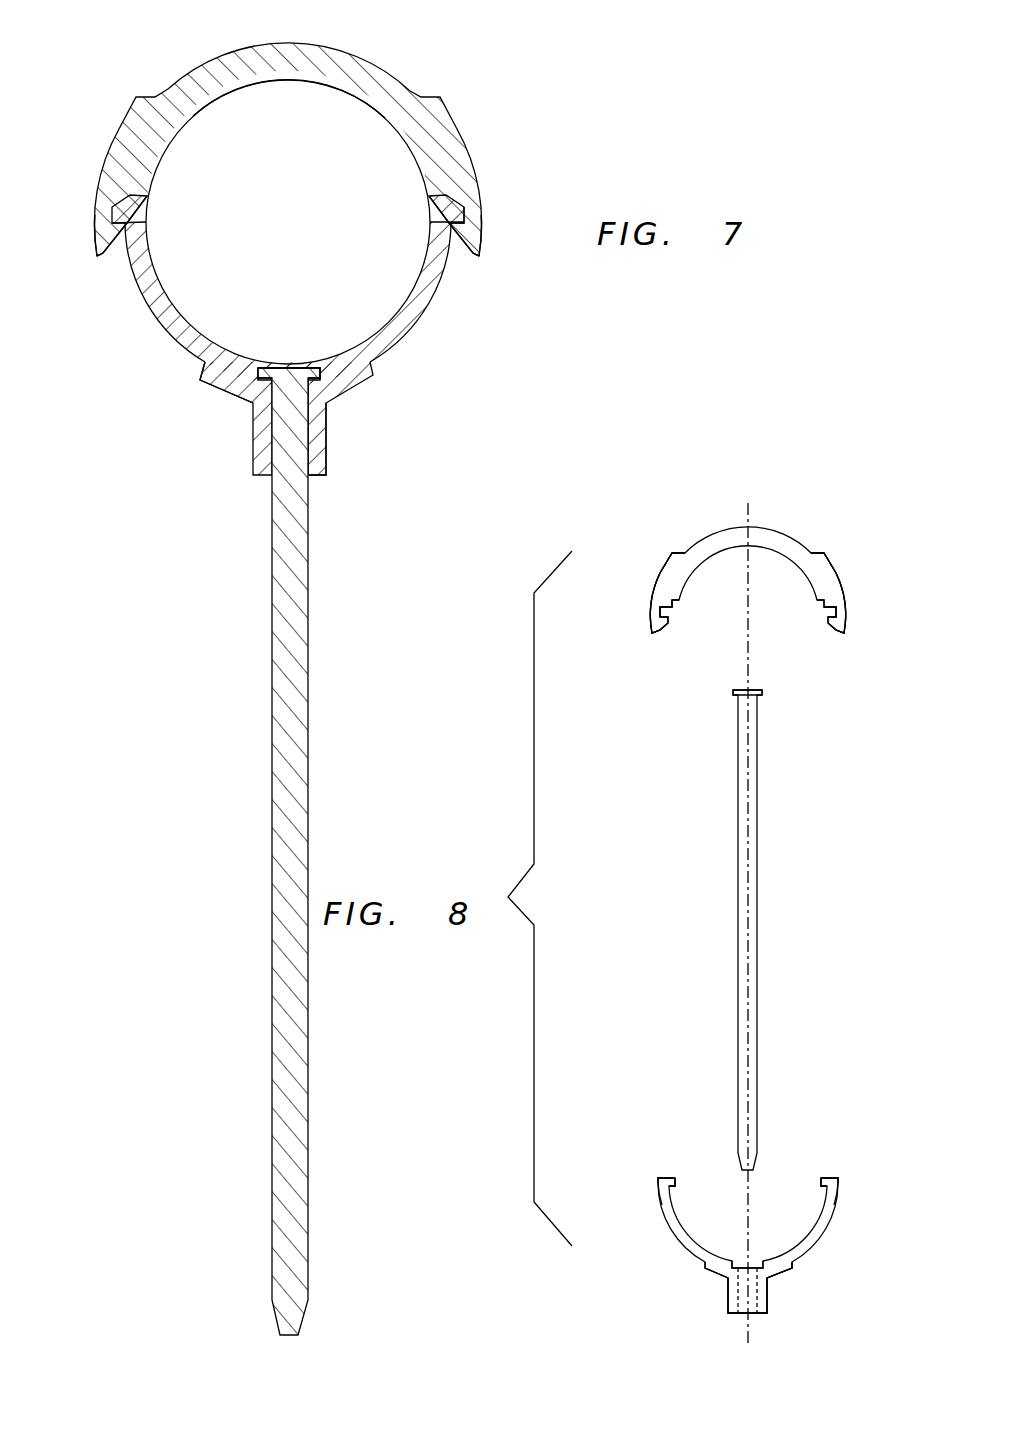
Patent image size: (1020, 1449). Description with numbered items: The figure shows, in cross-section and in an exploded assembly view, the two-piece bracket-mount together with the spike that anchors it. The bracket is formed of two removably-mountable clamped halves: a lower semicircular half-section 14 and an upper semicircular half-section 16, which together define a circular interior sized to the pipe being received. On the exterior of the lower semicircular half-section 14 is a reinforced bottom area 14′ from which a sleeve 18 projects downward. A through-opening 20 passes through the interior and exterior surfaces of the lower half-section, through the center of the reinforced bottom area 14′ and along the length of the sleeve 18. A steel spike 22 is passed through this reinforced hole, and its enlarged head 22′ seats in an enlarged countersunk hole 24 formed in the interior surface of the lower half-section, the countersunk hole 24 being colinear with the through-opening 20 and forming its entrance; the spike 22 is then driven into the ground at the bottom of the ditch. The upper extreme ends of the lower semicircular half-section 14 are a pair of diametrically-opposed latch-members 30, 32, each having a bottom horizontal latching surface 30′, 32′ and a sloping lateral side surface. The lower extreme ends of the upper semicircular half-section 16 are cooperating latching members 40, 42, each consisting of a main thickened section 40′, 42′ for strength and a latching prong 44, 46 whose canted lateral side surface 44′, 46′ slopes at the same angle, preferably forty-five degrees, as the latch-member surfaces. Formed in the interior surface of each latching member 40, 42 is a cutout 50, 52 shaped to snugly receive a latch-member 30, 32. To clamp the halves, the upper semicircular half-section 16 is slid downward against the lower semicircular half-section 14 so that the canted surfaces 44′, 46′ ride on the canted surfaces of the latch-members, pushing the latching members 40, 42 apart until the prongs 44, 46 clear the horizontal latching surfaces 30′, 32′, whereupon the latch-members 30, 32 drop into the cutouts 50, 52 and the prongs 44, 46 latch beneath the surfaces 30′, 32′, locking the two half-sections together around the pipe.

In FIG. 7, the lower semicircular half-section 14 is at (426, 323).
In FIG. 8, the lower semicircular half-section 14 is at (824, 1237).
In FIG. 7, the reinforced bottom area 14′ is at (212, 385).
In FIG. 8, the reinforced bottom area 14′ is at (784, 1276).
In FIG. 7, the upper semicircular half-section 16 is at (384, 58).
In FIG. 8, the upper semicircular half-section 16 is at (798, 528).
In FIG. 7, the sleeve 18 is at (255, 443).
In FIG. 8, the sleeve 18 is at (768, 1313).
In FIG. 7, the through-opening 20 is at (326, 443).
In FIG. 8, the through-opening 20 is at (746, 1294).
In FIG. 7, the steel spike 22 is at (306, 556).
In FIG. 8, the steel spike 22 is at (759, 748).
In FIG. 7, the enlarged head 22′ is at (288, 372).
In FIG. 8, the enlarged head 22′ is at (756, 692).
In FIG. 7, the countersunk hole 24 is at (259, 368).
In FIG. 8, the countersunk hole 24 is at (738, 1262).
In FIG. 7, the latch-member 30 is at (138, 210).
In FIG. 8, the latch-member 30 is at (660, 1178).
In FIG. 8, the horizontal latching surface 30′ is at (666, 1194).
In FIG. 7, the latch-member 32 is at (446, 203).
In FIG. 8, the latch-member 32 is at (829, 1174).
In FIG. 8, the horizontal latching surface 32′ is at (835, 1193).
In FIG. 7, the cooperating latching member 40 is at (92, 162).
In FIG. 8, the cooperating latching member 40 is at (642, 597).
In FIG. 8, the main thickened section 40′ is at (684, 583).
In FIG. 7, the cooperating latching member 42 is at (490, 178).
In FIG. 8, the cooperating latching member 42 is at (848, 594).
In FIG. 8, the main thickened section 42′ is at (829, 570).
In FIG. 7, the latching prong 44 is at (92, 240).
In FIG. 8, the latching prong 44 is at (657, 640).
In FIG. 7, the canted lateral side surface 44′ is at (115, 258).
In FIG. 8, the canted lateral side surface 44′ is at (661, 631).
In FIG. 7, the latching prong 46 is at (492, 237).
In FIG. 8, the latching prong 46 is at (844, 640).
In FIG. 7, the canted lateral side surface 46′ is at (466, 260).
In FIG. 8, the canted lateral side surface 46′ is at (836, 631).
In FIG. 8, the cutout 50 is at (666, 608).
In FIG. 7, the cutout 52 is at (450, 225).
In FIG. 8, the cutout 52 is at (822, 607).